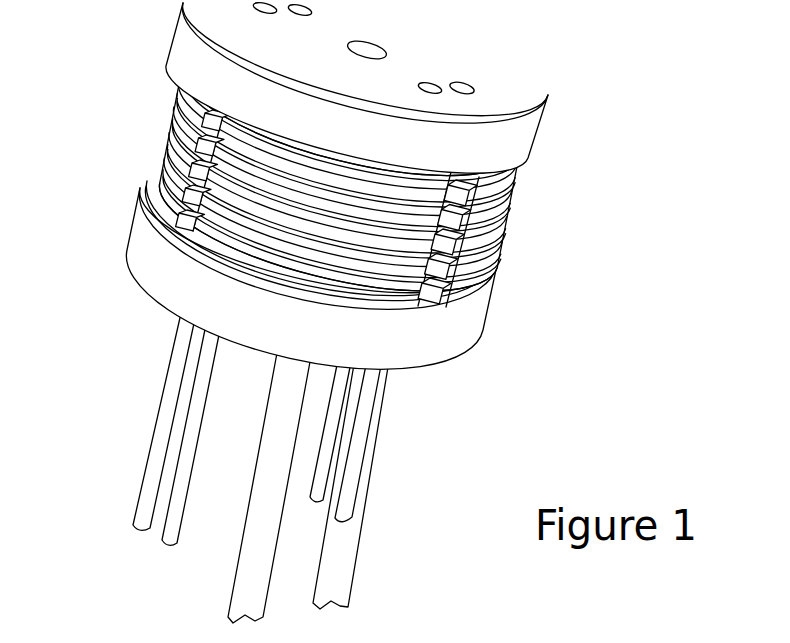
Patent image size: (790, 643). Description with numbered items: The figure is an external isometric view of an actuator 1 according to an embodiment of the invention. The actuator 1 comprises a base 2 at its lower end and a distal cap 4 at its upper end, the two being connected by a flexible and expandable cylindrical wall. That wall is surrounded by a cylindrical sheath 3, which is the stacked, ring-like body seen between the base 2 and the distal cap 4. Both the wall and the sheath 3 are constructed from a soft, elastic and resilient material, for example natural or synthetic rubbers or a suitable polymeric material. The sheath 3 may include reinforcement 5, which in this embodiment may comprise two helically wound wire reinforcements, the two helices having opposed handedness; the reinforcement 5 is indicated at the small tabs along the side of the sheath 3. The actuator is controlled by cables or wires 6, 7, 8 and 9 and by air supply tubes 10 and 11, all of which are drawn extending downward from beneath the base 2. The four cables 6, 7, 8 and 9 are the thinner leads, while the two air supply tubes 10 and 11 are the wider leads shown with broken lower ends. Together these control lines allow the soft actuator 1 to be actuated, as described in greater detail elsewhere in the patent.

The actuator 1 is at (470, 36).
The base 2 is at (125, 246).
The cylindrical sheath 3 is at (160, 137).
The distal cap 4 is at (173, 42).
The reinforcement 5 is at (435, 253).
The cable 6 is at (157, 413).
The cable 7 is at (167, 506).
The cable 8 is at (335, 415).
The cable 9 is at (350, 487).
The air supply tube 10 is at (248, 587).
The air supply tube 11 is at (342, 583).